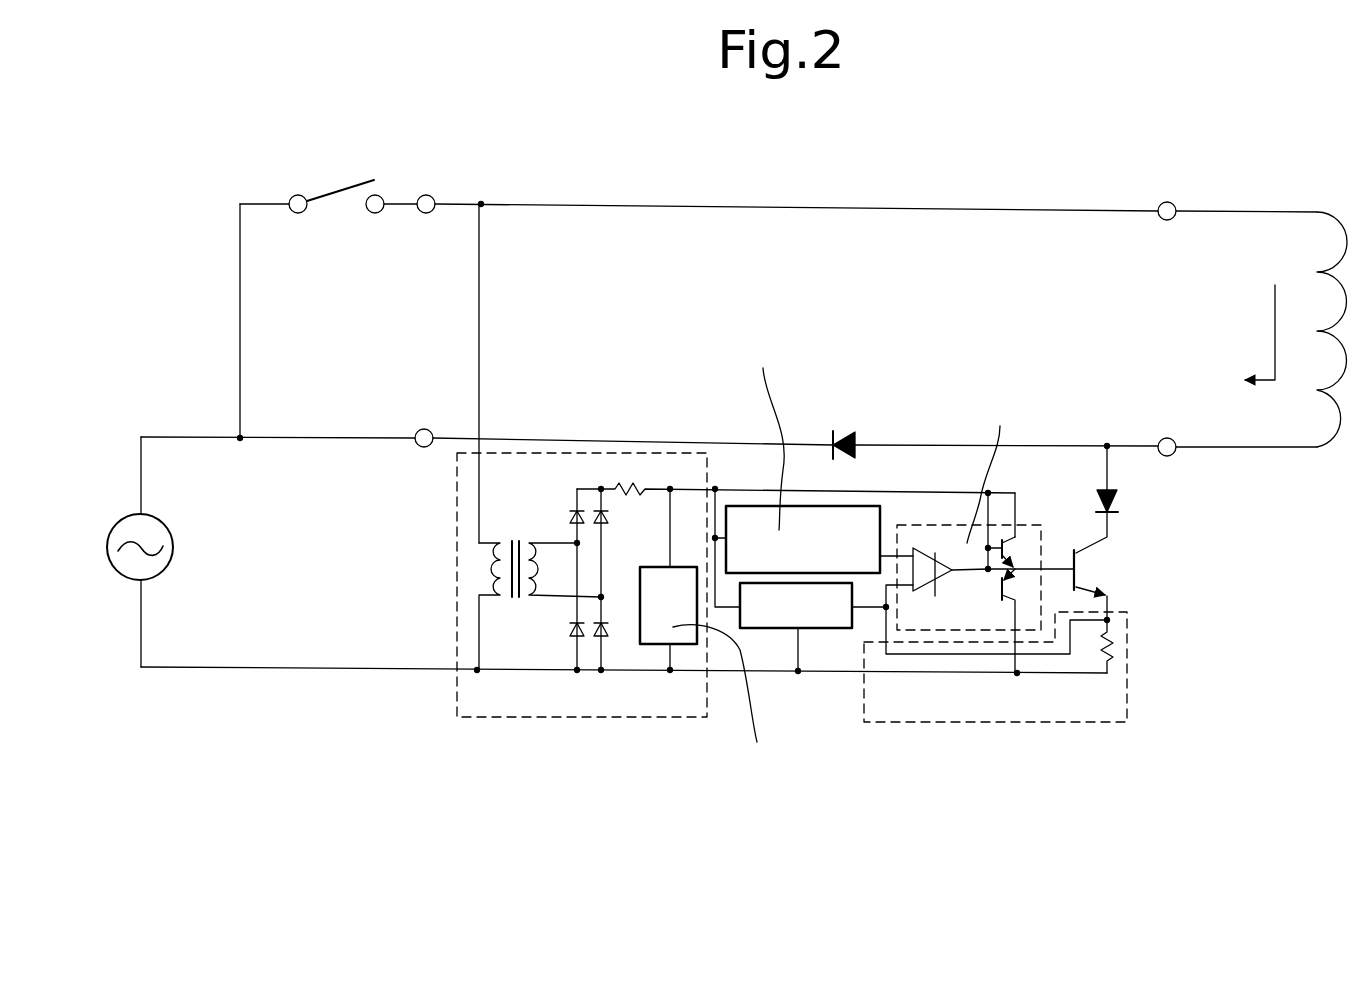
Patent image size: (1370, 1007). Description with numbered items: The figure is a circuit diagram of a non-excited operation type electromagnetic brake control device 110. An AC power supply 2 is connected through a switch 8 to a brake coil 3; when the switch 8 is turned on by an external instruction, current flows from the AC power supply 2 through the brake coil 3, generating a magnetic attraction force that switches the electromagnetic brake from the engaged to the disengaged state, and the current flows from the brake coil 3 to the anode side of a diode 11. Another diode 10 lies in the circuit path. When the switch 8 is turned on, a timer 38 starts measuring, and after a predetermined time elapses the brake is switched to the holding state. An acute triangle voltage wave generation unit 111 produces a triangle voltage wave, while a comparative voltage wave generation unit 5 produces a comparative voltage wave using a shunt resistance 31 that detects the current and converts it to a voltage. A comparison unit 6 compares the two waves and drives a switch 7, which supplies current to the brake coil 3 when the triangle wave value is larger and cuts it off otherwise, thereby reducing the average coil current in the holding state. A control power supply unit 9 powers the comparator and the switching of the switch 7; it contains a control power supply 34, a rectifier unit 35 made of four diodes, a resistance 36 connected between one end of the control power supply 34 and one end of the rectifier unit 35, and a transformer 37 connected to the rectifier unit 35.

The non-excited operation type electromagnetic brake control device 110 is at (688, 163).
The switch 8 is at (345, 190).
The brake coil 3 is at (1341, 270).
The AC power supply 2 is at (172, 528).
The diode 10 is at (846, 430).
The control power supply unit 9 is at (662, 720).
The transformer 37 is at (514, 531).
The rectifier unit 35 is at (595, 477).
The resistance 36 is at (640, 486).
The control power supply 34 is at (655, 567).
The acute triangle voltage wave generation unit 111 is at (880, 522).
The timer 38 is at (779, 628).
The comparison unit 6 is at (1046, 522).
The switch 7 is at (1098, 565).
The diode 11 is at (1120, 502).
The shunt resistance 31 is at (1115, 650).
The comparative voltage wave generation unit 5 is at (920, 725).